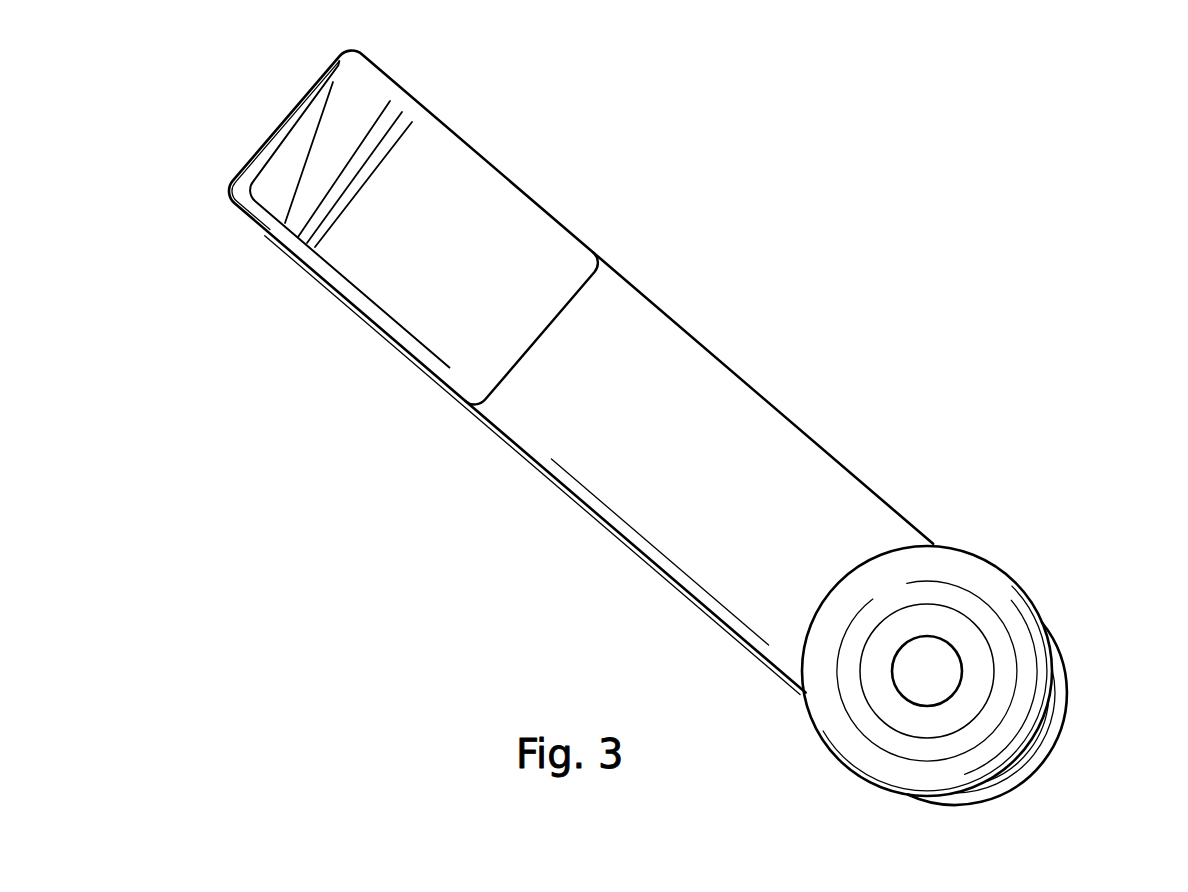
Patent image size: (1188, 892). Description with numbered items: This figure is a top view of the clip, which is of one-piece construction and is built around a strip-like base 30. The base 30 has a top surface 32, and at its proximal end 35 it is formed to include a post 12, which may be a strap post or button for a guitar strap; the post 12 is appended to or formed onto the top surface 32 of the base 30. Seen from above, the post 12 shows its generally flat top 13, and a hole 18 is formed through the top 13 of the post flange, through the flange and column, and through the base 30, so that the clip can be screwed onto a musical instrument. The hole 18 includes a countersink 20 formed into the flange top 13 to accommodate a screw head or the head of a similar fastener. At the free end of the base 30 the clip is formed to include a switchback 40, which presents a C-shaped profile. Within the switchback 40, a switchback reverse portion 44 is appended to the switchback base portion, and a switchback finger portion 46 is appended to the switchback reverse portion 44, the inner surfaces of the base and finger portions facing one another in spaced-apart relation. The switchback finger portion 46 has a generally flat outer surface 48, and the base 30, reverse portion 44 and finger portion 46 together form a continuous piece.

The post 12 is at (1012, 530).
The top 13 is at (869, 592).
The hole 18 is at (927, 671).
The countersink 20 is at (970, 642).
The base 30 is at (588, 561).
The top surface 32 is at (657, 473).
The proximal end 35 is at (1093, 724).
The switchback 40 is at (227, 249).
The switchback reverse portion 44 is at (262, 148).
The switchback finger portion 46 is at (485, 190).
The outer surface 48 is at (477, 277).